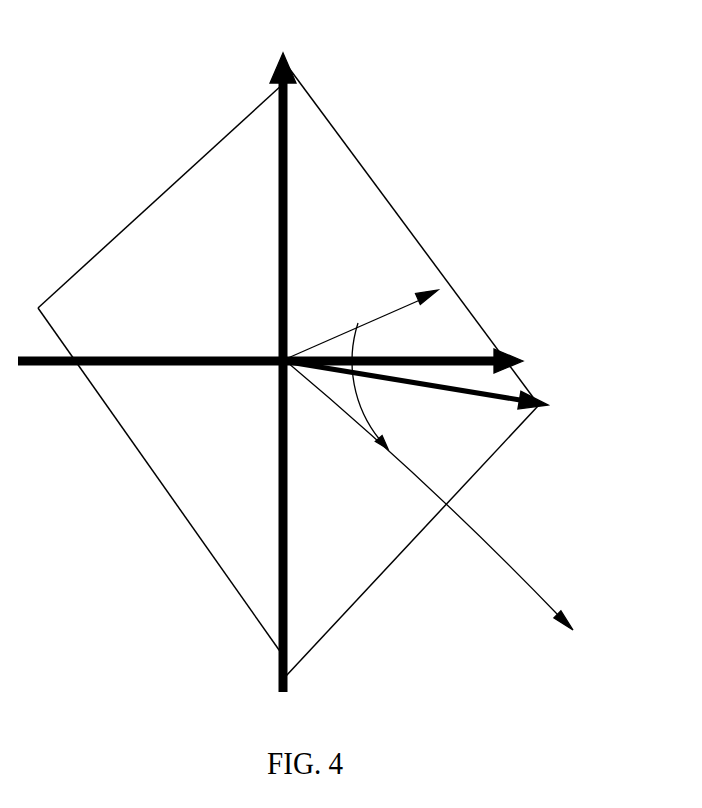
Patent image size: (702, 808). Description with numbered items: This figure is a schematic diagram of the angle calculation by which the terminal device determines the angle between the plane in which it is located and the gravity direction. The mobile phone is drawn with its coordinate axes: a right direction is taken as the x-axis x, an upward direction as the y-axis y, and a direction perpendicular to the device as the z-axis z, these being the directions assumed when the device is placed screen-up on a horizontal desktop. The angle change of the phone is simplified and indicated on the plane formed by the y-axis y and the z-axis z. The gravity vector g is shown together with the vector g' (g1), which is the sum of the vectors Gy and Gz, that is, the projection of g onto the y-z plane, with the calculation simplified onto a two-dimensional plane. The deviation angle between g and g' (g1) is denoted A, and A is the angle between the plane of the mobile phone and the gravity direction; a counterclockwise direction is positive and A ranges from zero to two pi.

The x-axis x is at (285, 359).
The y-axis y is at (283, 352).
The z-axis z is at (429, 394).
The gravity direction g is at (443, 496).
The projection g' of gravity g1 is at (363, 312).
The angle A is at (397, 386).